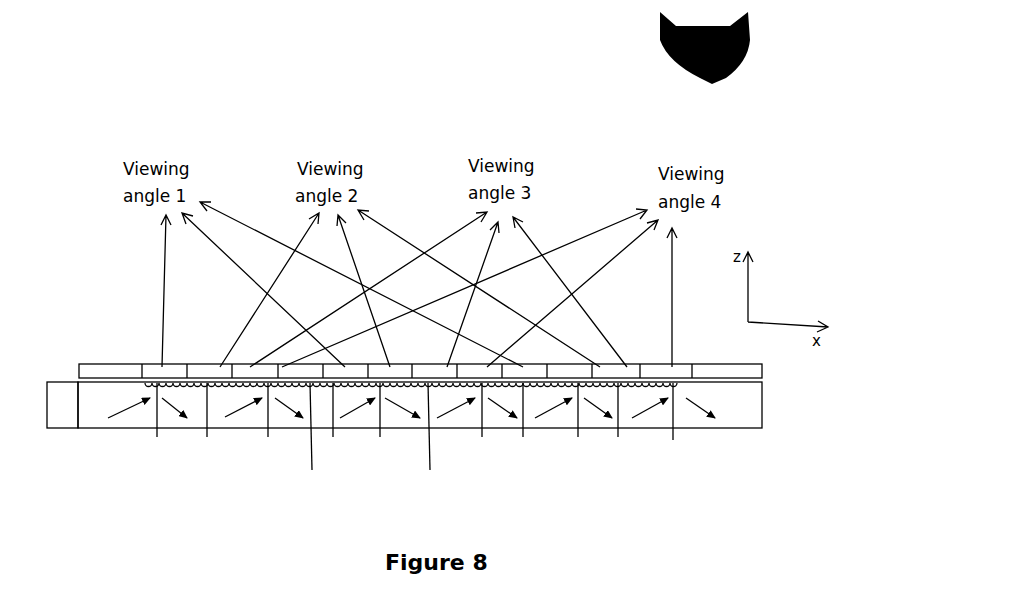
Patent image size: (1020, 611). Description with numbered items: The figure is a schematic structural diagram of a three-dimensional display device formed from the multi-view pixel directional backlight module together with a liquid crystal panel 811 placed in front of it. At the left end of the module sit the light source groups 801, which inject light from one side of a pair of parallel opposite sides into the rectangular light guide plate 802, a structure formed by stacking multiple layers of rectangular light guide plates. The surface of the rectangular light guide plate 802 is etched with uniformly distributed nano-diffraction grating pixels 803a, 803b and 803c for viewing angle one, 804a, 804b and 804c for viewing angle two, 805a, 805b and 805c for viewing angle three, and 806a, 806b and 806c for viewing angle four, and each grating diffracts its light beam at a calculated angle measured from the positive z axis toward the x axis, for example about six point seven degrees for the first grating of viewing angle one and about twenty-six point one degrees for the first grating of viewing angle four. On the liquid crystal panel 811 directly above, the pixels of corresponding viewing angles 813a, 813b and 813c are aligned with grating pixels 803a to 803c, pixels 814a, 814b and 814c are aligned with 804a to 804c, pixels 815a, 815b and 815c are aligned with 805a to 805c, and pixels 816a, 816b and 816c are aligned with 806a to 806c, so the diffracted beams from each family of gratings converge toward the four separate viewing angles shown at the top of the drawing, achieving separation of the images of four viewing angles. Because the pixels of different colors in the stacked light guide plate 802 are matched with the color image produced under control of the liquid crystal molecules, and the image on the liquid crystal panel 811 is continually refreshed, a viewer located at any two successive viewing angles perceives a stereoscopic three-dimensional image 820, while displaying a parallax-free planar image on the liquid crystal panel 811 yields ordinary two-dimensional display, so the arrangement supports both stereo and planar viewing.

The light source groups 801 is at (66, 407).
The rectangular light guide plate 802 is at (748, 410).
The liquid crystal panel 811 is at (752, 375).
The 3D image 820 is at (717, 78).
The nano-diffraction grating pixel 803a is at (141, 424).
The nano-diffraction grating pixel 804a is at (196, 424).
The nano-diffraction grating pixel 805a is at (259, 424).
The nano-diffraction grating pixel 806a is at (303, 436).
The nano-diffraction grating pixel 803b is at (347, 424).
The nano-diffraction grating pixel 804b is at (395, 424).
The nano-diffraction grating pixel 805b is at (444, 436).
The nano-diffraction grating pixel 806b is at (487, 424).
The nano-diffraction grating pixel 803c is at (542, 424).
The nano-diffraction grating pixel 804c is at (588, 424).
The nano-diffraction grating pixel 805c is at (642, 424).
The nano-diffraction grating pixel 806c is at (691, 427).
The viewing angle pixel 813a is at (143, 367).
The viewing angle pixel 814a is at (190, 365).
The viewing angle pixel 815a is at (242, 357).
The viewing angle pixel 816a is at (282, 367).
The viewing angle pixel 813b is at (343, 367).
The viewing angle pixel 814b is at (370, 367).
The viewing angle pixel 815b is at (418, 367).
The viewing angle pixel 816b is at (450, 330).
The viewing angle pixel 813c is at (505, 365).
The viewing angle pixel 814c is at (565, 365).
The viewing angle pixel 815c is at (613, 365).
The viewing angle pixel 816c is at (657, 367).